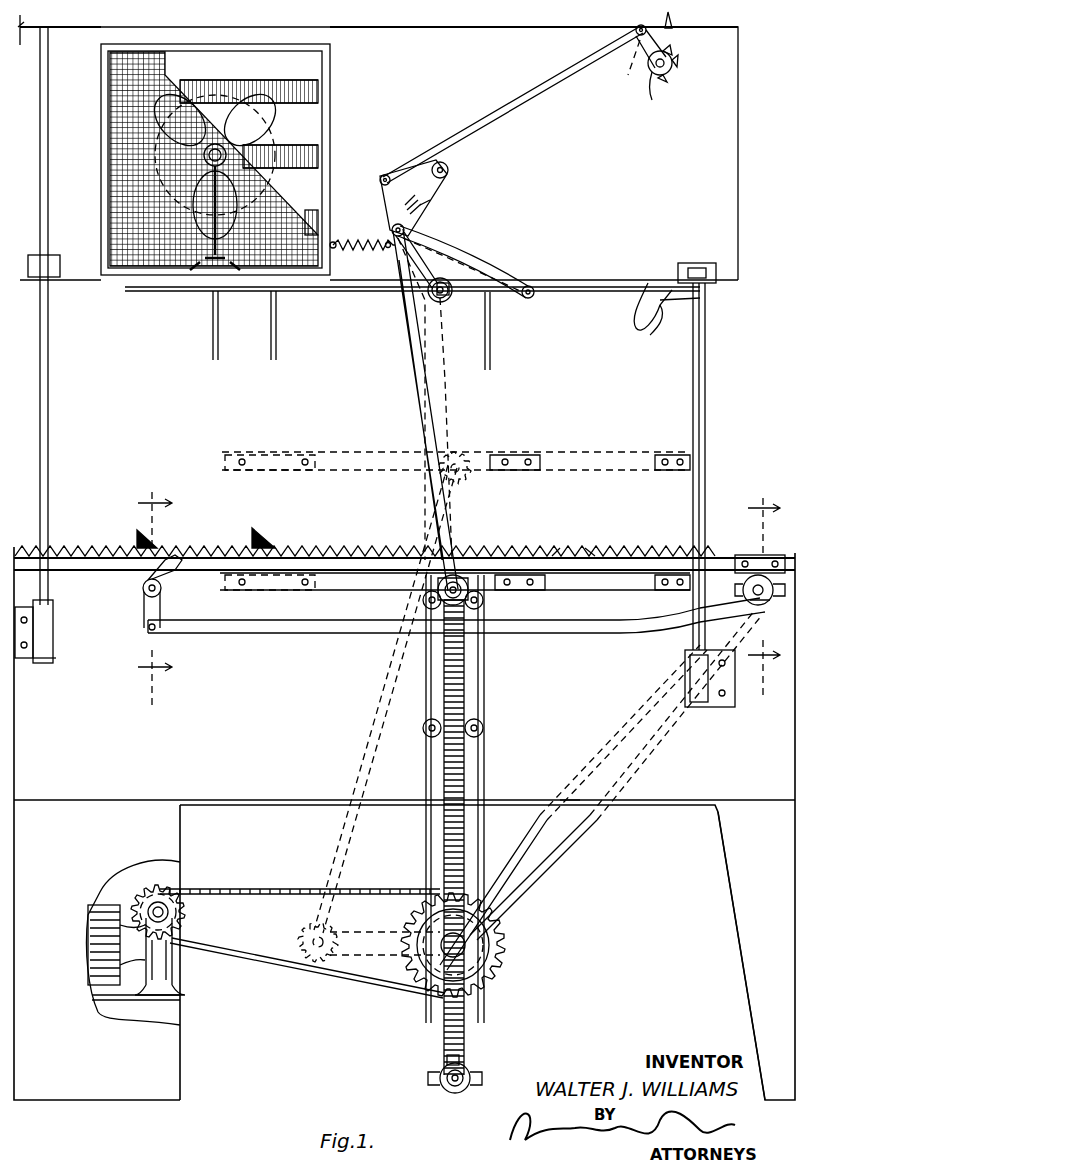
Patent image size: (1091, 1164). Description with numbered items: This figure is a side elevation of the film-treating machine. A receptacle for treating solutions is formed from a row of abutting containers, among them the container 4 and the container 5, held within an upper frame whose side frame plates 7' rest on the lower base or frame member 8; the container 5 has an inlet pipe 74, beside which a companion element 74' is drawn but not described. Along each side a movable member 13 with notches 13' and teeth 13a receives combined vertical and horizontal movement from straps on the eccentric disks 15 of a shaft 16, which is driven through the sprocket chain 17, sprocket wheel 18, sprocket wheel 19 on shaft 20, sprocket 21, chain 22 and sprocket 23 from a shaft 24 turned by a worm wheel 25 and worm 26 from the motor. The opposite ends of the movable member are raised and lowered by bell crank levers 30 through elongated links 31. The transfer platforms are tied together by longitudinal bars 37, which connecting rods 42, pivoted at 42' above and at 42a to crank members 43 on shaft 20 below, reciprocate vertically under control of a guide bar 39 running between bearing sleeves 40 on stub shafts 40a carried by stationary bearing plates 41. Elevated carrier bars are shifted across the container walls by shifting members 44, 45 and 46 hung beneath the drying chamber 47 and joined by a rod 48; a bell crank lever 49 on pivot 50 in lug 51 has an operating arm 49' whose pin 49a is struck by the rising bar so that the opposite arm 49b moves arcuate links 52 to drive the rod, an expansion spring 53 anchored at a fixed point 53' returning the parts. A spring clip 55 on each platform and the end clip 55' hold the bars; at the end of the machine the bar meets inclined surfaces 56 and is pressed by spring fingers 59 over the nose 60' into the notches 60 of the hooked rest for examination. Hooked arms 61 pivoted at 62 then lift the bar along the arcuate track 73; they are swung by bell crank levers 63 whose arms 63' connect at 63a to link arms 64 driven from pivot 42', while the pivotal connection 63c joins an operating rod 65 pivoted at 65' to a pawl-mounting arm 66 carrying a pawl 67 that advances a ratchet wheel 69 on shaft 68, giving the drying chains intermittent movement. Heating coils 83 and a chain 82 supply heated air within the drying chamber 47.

The container 4 is at (155, 594).
The container 5 is at (764, 589).
The side frame plates 7' is at (566, 726).
The lower base or frame member 8 is at (752, 866).
The movable member 13 is at (415, 524).
The teeth 13a is at (562, 545).
The notches 13' is at (593, 532).
The disks 15 is at (760, 580).
The shaft 16 is at (748, 575).
The sprocket chain 17 is at (668, 672).
The sprocket wheel 18 is at (748, 602).
The sprocket wheel 19 is at (505, 905).
The shaft 20 is at (482, 960).
The sprocket 21 is at (412, 890).
The chain 22 is at (350, 980).
The sprocket 23 is at (188, 912).
The shaft 24 is at (182, 893).
The worm wheel 25 is at (160, 875).
The worm 26 is at (180, 965).
The bell crank levers 30 is at (146, 604).
The elongated links 31 is at (232, 634).
The longitudinal bars 37 is at (347, 452).
The vertically movable guide bar 39 is at (467, 700).
The bearing sleeves 40 is at (441, 725).
The stub shafts 40a is at (483, 730).
The stationary bearing plates 41 is at (480, 770).
The connecting rods 42 is at (418, 699).
The pivot 42' is at (482, 444).
The pivotal connection 42a is at (486, 1048).
The crank members 43 is at (374, 940).
The shifting member 44 is at (211, 330).
The shifting member 45 is at (270, 330).
The shifting member 46 is at (492, 318).
The drying chamber 47 is at (20, 198).
The rod 48 is at (330, 293).
The bell crank lever 49 is at (450, 308).
The pin 49a is at (420, 318).
The opposite arm 49b is at (426, 264).
The operating arm 49' is at (455, 429).
The pivot 50 is at (428, 296).
The lug 51 is at (470, 280).
The arcuate links 52 is at (458, 262).
The expansion spring 53 is at (362, 231).
The fixed point 53' is at (364, 260).
The spring clip 55 is at (363, 510).
The clip 55' is at (655, 503).
The upwardly inclined surfaces 56 is at (653, 335).
The spring fingers 59 is at (707, 440).
The notches 60 is at (632, 306).
The nose 60' is at (711, 304).
The hooked arms 61 is at (671, 20).
The pivots 62 is at (449, 169).
The bell crank levers 63 is at (413, 177).
The connection 63a is at (393, 226).
The pivotal connection 63c is at (385, 176).
The arms 63' is at (461, 189).
The link arms 64 is at (420, 368).
The operating rod 65 is at (513, 105).
The pivot 65' is at (622, 19).
The pawl-mounting arm 66 is at (640, 52).
The pawl 67 is at (630, 78).
The shaft 68 is at (667, 70).
The ratchet wheel 69 is at (653, 98).
The arcuate track 73 is at (672, 283).
The inlet pipe 74 is at (170, 528).
The pawl 74' is at (275, 524).
The chain 82 is at (262, 120).
The heating coils 83 is at (312, 96).